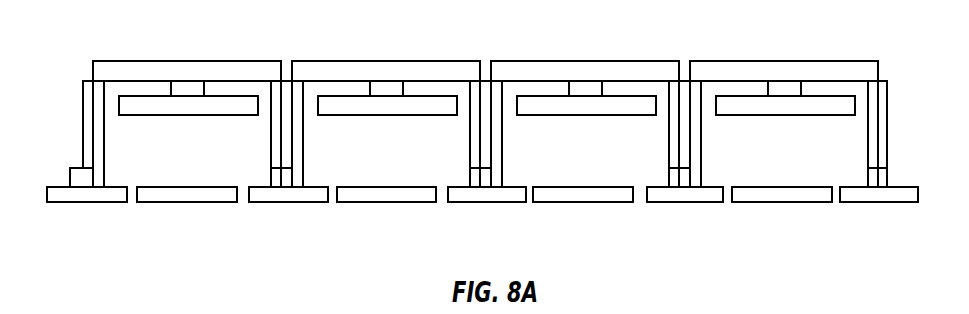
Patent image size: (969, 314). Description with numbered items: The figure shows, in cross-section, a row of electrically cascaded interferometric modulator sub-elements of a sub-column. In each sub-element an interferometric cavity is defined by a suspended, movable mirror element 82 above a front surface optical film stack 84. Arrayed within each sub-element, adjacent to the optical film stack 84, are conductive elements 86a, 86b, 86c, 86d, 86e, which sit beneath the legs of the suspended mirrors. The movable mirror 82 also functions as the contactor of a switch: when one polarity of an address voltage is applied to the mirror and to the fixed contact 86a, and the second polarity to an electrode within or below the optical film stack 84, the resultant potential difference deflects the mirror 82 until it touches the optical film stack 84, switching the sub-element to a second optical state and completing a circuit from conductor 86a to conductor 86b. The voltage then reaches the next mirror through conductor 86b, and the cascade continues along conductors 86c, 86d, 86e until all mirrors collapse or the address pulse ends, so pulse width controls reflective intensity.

The movable mirror element 82 is at (164, 117).
The optical film stack 84 is at (183, 204).
The conductive element 86a is at (88, 204).
The conductive element 86b is at (275, 204).
The conductive element 86c is at (465, 204).
The conductive element 86d is at (670, 204).
The conductive element 86e is at (866, 204).